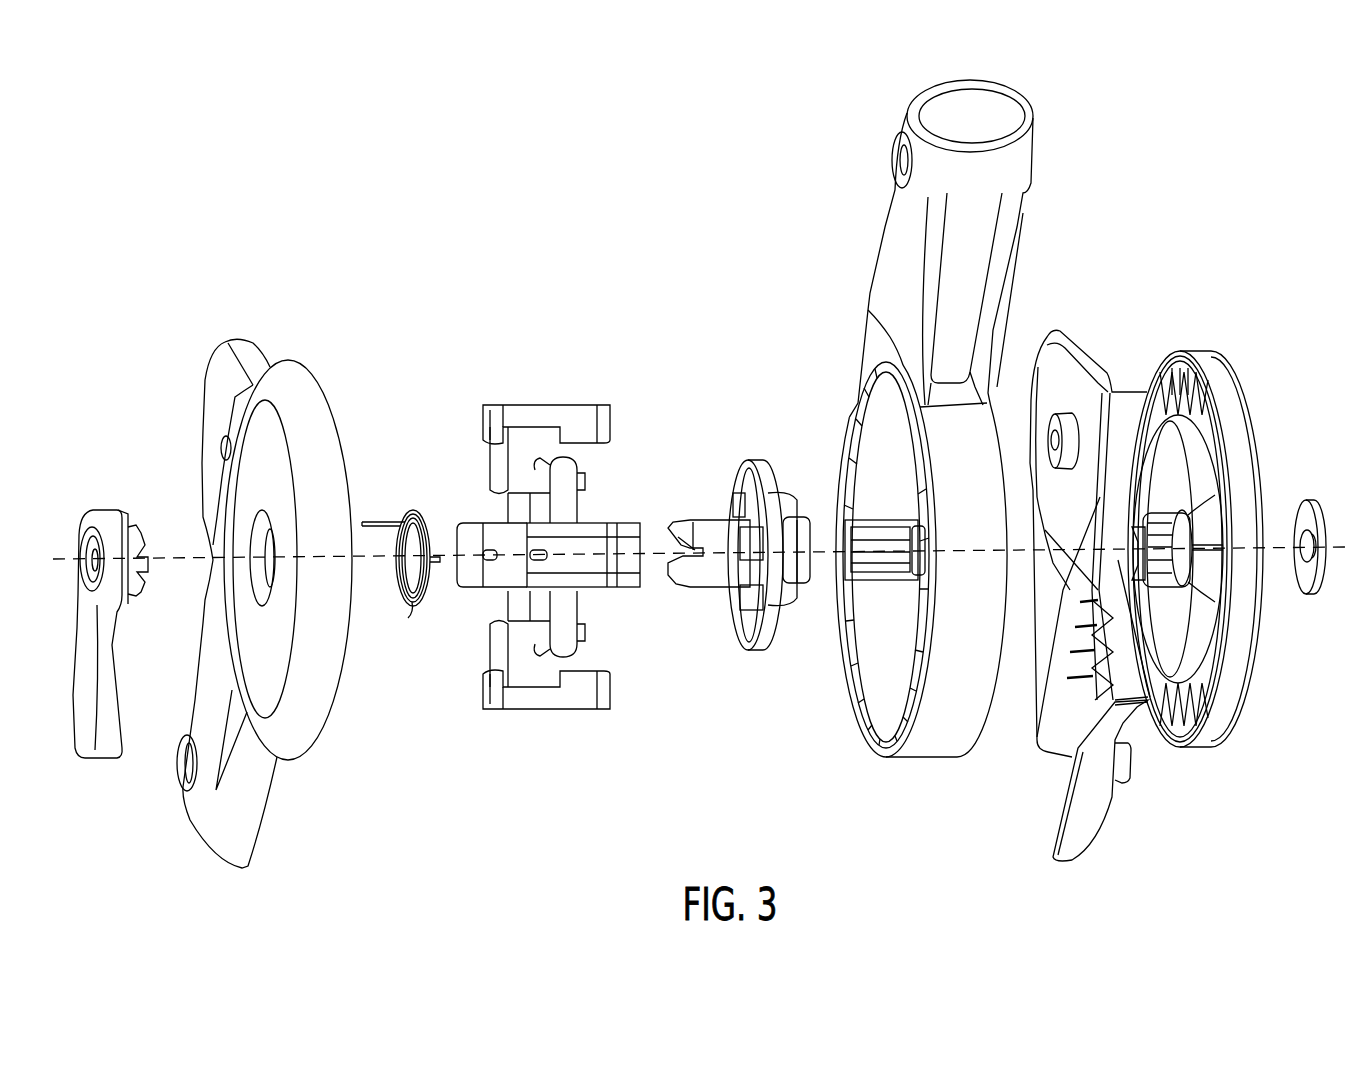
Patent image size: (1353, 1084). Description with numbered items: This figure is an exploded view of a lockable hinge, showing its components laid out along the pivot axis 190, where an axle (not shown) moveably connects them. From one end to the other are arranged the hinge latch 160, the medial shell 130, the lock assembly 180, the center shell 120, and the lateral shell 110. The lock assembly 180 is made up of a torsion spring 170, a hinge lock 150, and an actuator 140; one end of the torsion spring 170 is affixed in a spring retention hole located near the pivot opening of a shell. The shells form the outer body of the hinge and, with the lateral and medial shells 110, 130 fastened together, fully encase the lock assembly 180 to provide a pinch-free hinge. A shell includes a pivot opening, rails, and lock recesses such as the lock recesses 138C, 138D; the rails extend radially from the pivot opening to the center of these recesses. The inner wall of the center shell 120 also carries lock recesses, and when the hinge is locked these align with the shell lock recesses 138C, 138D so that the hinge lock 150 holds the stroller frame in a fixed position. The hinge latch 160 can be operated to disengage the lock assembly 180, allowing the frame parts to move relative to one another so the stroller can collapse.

The lateral shell 110 is at (1195, 557).
The center shell 120 is at (912, 760).
The medial shell 130 is at (298, 762).
The lock recess 138C is at (1185, 382).
The lock recess 138D is at (1095, 352).
The actuator 140 is at (760, 650).
The hinge lock 150 is at (560, 707).
The hinge latch 160 is at (106, 760).
The torsion spring 170 is at (410, 620).
The lock assembly 180 is at (785, 395).
The pivot axis 190 is at (54, 558).